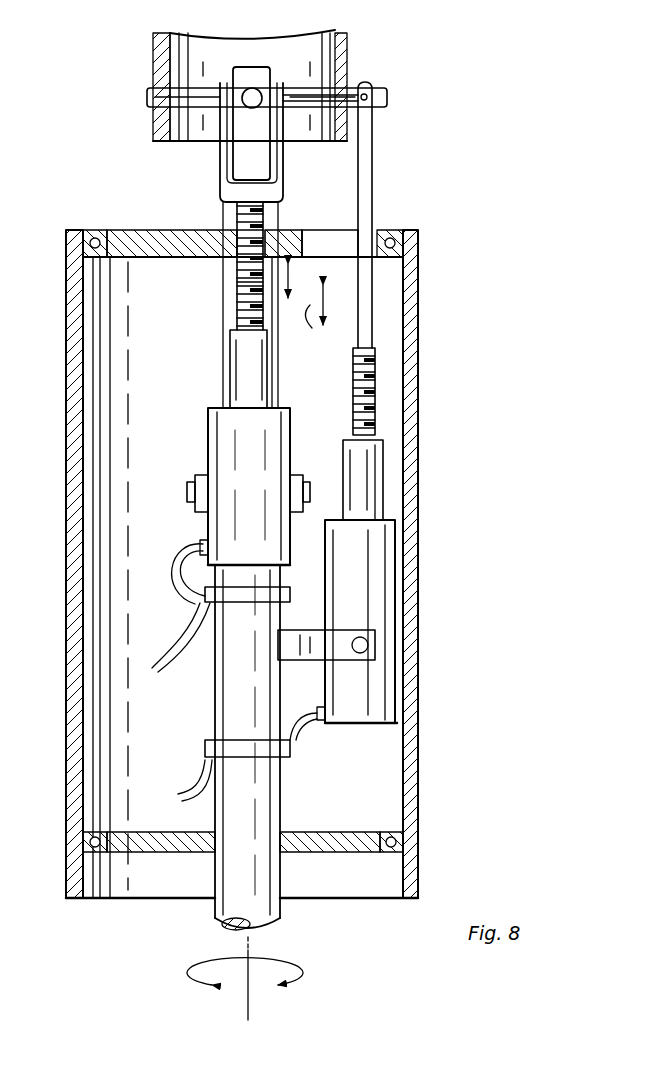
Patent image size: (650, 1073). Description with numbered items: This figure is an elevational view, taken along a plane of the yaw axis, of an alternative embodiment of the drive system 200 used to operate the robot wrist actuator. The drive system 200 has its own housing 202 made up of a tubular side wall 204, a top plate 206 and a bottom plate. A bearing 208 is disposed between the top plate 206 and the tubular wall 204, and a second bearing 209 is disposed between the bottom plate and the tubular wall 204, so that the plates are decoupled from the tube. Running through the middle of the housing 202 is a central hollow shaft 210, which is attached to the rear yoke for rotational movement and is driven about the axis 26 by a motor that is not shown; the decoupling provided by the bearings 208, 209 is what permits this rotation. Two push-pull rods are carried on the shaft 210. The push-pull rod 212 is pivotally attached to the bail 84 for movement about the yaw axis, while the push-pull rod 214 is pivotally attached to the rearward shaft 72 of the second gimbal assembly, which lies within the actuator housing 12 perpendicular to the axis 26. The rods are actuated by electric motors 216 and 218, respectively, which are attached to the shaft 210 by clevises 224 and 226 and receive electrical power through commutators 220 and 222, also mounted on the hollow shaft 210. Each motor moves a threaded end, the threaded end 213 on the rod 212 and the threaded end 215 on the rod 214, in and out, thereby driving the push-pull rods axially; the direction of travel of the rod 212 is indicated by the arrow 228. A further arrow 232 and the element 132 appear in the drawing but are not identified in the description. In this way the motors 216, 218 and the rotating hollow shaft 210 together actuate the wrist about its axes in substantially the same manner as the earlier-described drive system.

The housing 12 is at (147, 101).
The shaft 72 is at (312, 88).
The bail 84 is at (240, 150).
The top plate 206 is at (265, 224).
The push-pull rod 214 is at (372, 170).
The bearing 208 is at (403, 232).
The tubular side wall 204 is at (418, 263).
The housing 202 is at (421, 318).
The drive system 200 is at (433, 378).
The central hollow shaft 210 is at (236, 268).
The push-pull rod 212 is at (236, 288).
The threaded end 213 is at (236, 316).
The arrow 228 is at (291, 288).
The movement arrow 232 is at (308, 320).
The threaded end 215 is at (378, 426).
The clevis 224 is at (196, 477).
The motor 216 is at (220, 522).
The motor 218 is at (380, 561).
The commutator 220 is at (210, 598).
The clevis 226 is at (370, 641).
The commutator 222 is at (205, 745).
The shaft 132 is at (270, 798).
The bearing 209 is at (100, 839).
The axis 26 is at (250, 1005).